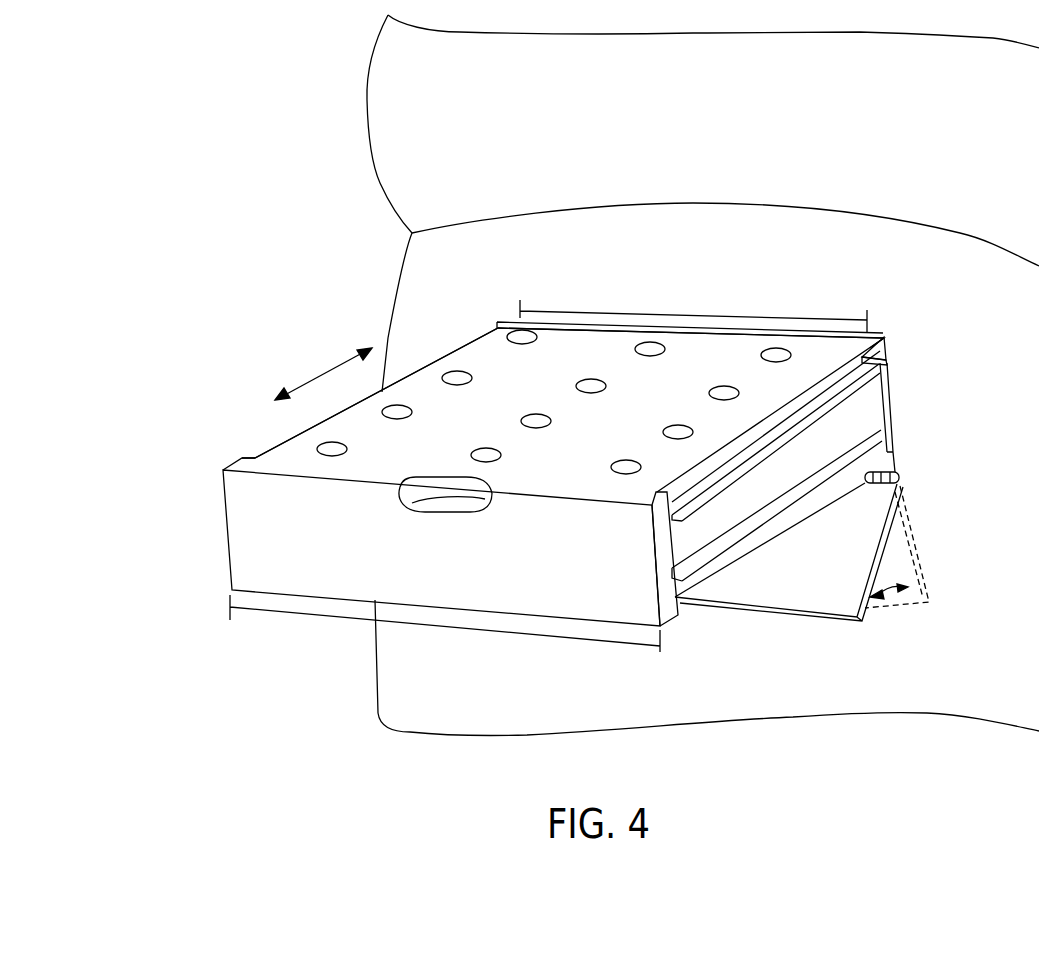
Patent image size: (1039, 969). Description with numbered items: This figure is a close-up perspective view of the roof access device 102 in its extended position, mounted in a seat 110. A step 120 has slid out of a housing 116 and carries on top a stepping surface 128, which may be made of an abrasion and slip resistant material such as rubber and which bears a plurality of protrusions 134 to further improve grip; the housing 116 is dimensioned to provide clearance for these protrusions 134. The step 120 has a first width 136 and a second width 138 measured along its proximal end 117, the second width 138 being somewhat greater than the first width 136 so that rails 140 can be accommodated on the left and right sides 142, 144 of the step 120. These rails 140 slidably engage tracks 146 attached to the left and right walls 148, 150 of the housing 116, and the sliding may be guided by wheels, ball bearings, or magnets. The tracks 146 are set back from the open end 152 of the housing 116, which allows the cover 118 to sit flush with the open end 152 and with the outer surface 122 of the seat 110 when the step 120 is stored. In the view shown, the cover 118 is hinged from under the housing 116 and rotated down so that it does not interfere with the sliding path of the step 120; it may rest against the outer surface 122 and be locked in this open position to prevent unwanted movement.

The roof access device 102 is at (177, 338).
The seat 110 is at (330, 98).
The housing 116 is at (905, 432).
The proximal end 117 is at (618, 580).
The cover 118 is at (793, 580).
The step 120 is at (230, 530).
The outer surface 122 is at (1018, 563).
The stepping surface 128 is at (556, 410).
The protrusions 134 is at (318, 447).
The first width 136 is at (677, 312).
The second width 138 is at (345, 620).
The rails 140 is at (812, 473).
The left side 142 is at (860, 348).
The right side 144 is at (428, 368).
The tracks 146 is at (886, 363).
The left wall 148 is at (884, 350).
The right wall 150 is at (497, 322).
The open end 152 is at (900, 466).